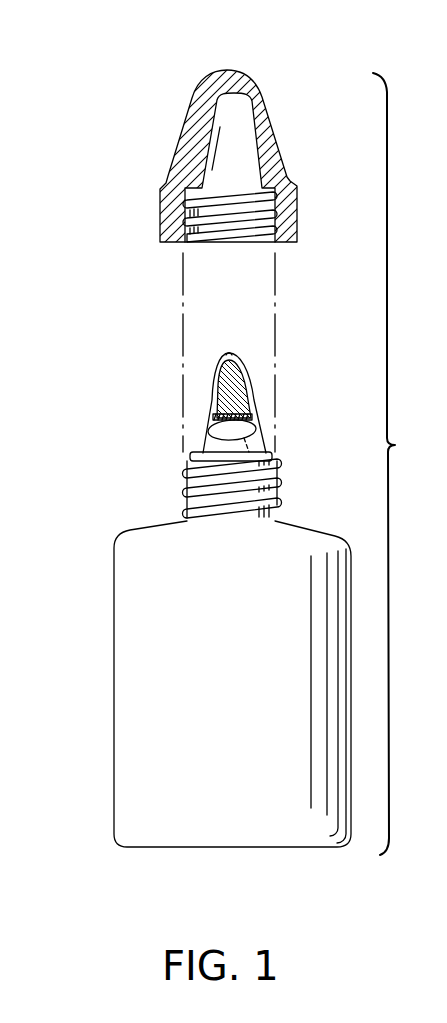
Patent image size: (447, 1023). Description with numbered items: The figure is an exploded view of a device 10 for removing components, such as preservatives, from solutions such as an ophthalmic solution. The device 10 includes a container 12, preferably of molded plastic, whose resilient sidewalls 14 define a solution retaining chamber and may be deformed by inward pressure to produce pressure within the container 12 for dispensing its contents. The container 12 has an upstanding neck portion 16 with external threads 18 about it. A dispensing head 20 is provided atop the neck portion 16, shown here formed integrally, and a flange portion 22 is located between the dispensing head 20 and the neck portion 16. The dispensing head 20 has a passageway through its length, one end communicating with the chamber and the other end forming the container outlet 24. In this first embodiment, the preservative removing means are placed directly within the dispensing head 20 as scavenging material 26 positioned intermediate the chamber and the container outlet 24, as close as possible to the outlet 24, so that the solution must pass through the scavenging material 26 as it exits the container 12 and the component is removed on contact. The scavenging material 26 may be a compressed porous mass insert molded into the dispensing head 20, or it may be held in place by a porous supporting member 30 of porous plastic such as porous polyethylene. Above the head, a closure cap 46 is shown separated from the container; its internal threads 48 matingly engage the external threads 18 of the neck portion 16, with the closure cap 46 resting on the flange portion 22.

The device 10 is at (403, 464).
The container 12 is at (308, 517).
The resilient sidewalls 14 is at (114, 683).
The neck portion 16 is at (190, 462).
The external threads 18 is at (277, 480).
The dispensing head 20 is at (255, 387).
The flange portion 22 is at (275, 438).
The container outlet 24 is at (229, 351).
The scavenging material 26 is at (212, 406).
The porous supporting member 30 is at (257, 408).
The closure cap 46 is at (172, 120).
The internal threads 48 is at (213, 243).